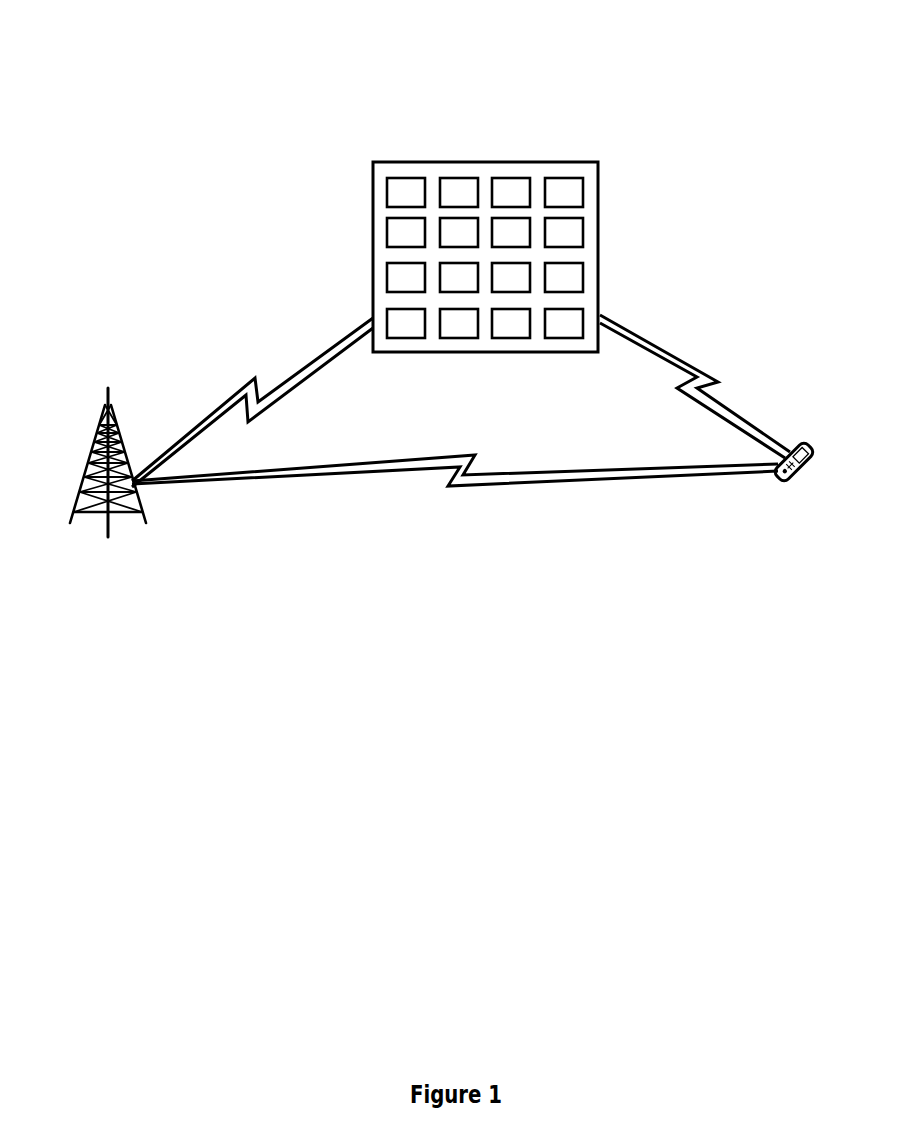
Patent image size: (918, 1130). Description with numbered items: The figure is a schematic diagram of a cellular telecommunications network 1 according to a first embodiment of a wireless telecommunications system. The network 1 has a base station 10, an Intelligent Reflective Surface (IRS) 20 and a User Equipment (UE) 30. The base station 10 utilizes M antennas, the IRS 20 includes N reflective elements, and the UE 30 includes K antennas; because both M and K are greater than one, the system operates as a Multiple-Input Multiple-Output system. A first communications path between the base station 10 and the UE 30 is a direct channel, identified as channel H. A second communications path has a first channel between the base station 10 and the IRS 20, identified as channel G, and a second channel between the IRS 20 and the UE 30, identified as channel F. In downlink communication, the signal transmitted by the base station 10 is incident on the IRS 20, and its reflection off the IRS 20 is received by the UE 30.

The cellular telecommunications network 1 is at (106, 45).
The base station 10 is at (105, 400).
The Intelligent Reflective Surface (IRS) 20 is at (396, 162).
The User Equipment (UE) 30 is at (817, 452).